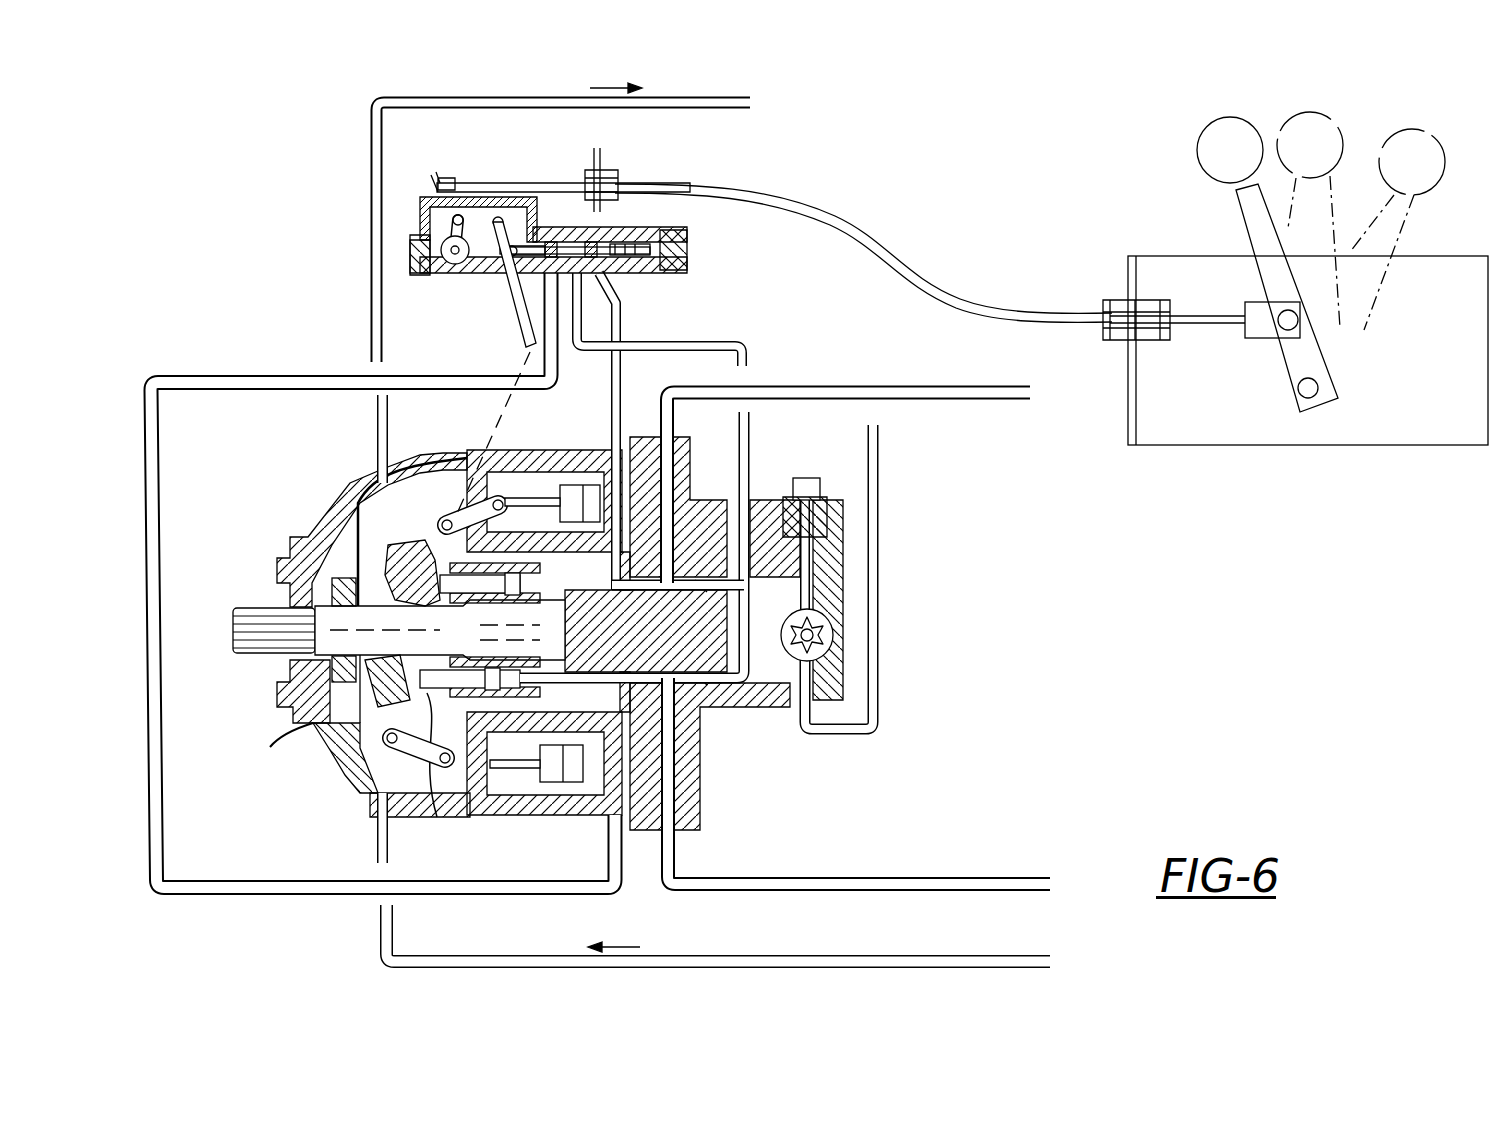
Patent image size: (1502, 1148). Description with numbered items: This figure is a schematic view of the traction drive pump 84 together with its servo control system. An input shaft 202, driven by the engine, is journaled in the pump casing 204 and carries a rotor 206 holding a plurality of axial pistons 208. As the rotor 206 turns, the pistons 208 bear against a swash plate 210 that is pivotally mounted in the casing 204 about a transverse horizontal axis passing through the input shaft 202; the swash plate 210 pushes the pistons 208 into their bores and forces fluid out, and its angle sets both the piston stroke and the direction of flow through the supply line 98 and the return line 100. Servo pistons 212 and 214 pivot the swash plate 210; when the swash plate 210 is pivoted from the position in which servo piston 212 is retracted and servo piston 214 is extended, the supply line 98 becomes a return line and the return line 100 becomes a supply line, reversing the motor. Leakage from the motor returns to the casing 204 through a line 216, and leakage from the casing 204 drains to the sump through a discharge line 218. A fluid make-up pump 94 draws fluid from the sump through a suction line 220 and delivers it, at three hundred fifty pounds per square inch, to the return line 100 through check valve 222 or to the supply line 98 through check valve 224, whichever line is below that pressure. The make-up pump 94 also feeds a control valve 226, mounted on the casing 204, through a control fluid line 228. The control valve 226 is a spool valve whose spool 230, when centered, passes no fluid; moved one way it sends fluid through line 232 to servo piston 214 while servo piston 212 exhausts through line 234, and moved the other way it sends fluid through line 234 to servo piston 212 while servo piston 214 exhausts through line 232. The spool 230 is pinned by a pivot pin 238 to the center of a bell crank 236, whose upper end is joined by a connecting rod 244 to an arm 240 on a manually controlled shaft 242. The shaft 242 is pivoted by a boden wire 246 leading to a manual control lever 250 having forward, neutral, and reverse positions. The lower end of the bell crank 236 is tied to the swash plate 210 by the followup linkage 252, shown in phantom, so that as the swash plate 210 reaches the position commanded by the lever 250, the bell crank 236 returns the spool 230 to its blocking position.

The traction drive pump 84 is at (340, 495).
The fluid make-up pump 94 is at (843, 688).
The supply line 98 is at (920, 388).
The return line 100 is at (980, 878).
The input shaft 202 is at (245, 655).
The pump casing 204 is at (490, 818).
The rotor 206 is at (435, 800).
The axial pistons 208 is at (348, 752).
The swash plate 210 is at (313, 723).
The servo piston 212 is at (592, 782).
The servo piston 214 is at (593, 488).
The line 216 is at (702, 955).
The discharge line 218 is at (372, 132).
The suction line 220 is at (880, 636).
The check valve 222 is at (725, 700).
The check valve 224 is at (700, 580).
The control valve 226 is at (678, 232).
The control fluid line 228 is at (727, 346).
The spool 230 is at (565, 245).
The line 232 is at (620, 352).
The line 234 is at (245, 378).
The bell crank 236 is at (512, 322).
The pivot pin 238 is at (500, 264).
The arm 240 is at (450, 235).
The manually controlled shaft 242 is at (450, 252).
The connecting rod 244 is at (430, 283).
The boden wire 246 is at (480, 183).
The manual control lever 250 is at (1235, 222).
The followup linkage 252 is at (485, 432).